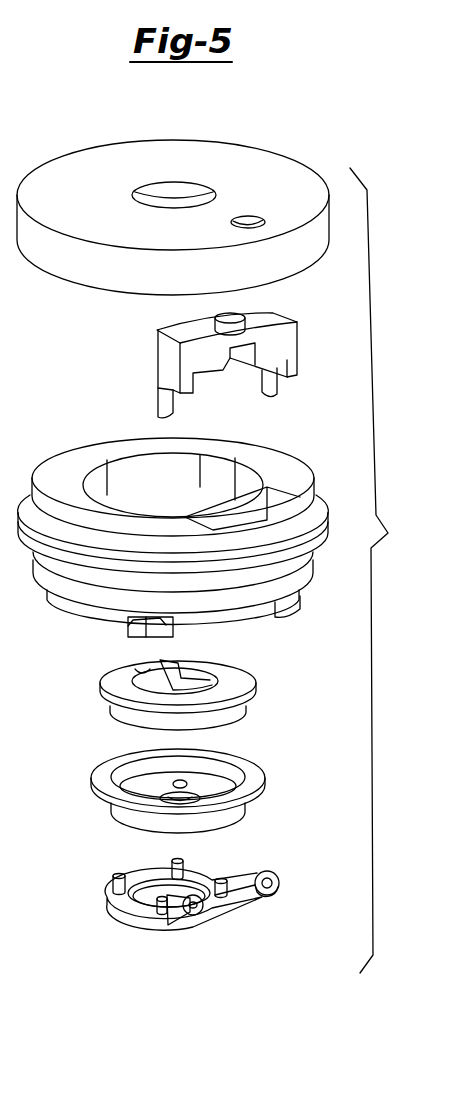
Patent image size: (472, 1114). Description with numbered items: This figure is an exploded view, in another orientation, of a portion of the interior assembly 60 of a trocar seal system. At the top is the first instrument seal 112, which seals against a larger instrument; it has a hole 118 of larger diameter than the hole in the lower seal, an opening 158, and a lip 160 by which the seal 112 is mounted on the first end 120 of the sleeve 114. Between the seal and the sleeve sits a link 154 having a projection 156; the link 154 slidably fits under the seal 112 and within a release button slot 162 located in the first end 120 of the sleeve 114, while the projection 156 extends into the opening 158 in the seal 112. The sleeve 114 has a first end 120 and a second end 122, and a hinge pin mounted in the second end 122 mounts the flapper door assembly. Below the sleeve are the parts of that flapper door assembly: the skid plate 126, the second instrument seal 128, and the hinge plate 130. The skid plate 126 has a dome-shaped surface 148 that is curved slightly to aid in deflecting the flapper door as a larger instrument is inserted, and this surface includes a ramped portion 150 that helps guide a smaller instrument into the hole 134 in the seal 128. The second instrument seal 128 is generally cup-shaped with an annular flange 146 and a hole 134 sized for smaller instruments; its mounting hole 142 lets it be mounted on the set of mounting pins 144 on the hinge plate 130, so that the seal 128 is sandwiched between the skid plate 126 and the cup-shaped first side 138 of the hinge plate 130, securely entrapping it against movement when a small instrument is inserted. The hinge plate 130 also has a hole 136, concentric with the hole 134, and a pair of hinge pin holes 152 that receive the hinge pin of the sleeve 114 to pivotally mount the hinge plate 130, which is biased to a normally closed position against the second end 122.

The interior assembly 60 is at (57, 368).
The first instrument seal 112 is at (256, 146).
The sleeve 114 is at (333, 535).
The hole 118 is at (162, 209).
The first end 120 is at (270, 460).
The second end 122 is at (268, 617).
The skid plate 126 is at (236, 710).
The second instrument seal 128 is at (245, 812).
The hinge plate 130 is at (194, 930).
The hole 134 is at (170, 800).
The hole 136 is at (138, 900).
The cup-shaped first side 138 is at (150, 873).
The mounting hole 142 is at (182, 783).
The mounting pins 144 is at (182, 868).
The annular flange 146 is at (252, 774).
The dome-shaped surface 148 is at (234, 683).
The ramped portion 150 is at (148, 668).
The hinge pin holes 152 is at (268, 887).
The link 154 is at (294, 347).
The projection 156 is at (229, 313).
The opening 158 is at (256, 215).
The lip 160 is at (40, 238).
The release button slot 162 is at (279, 500).